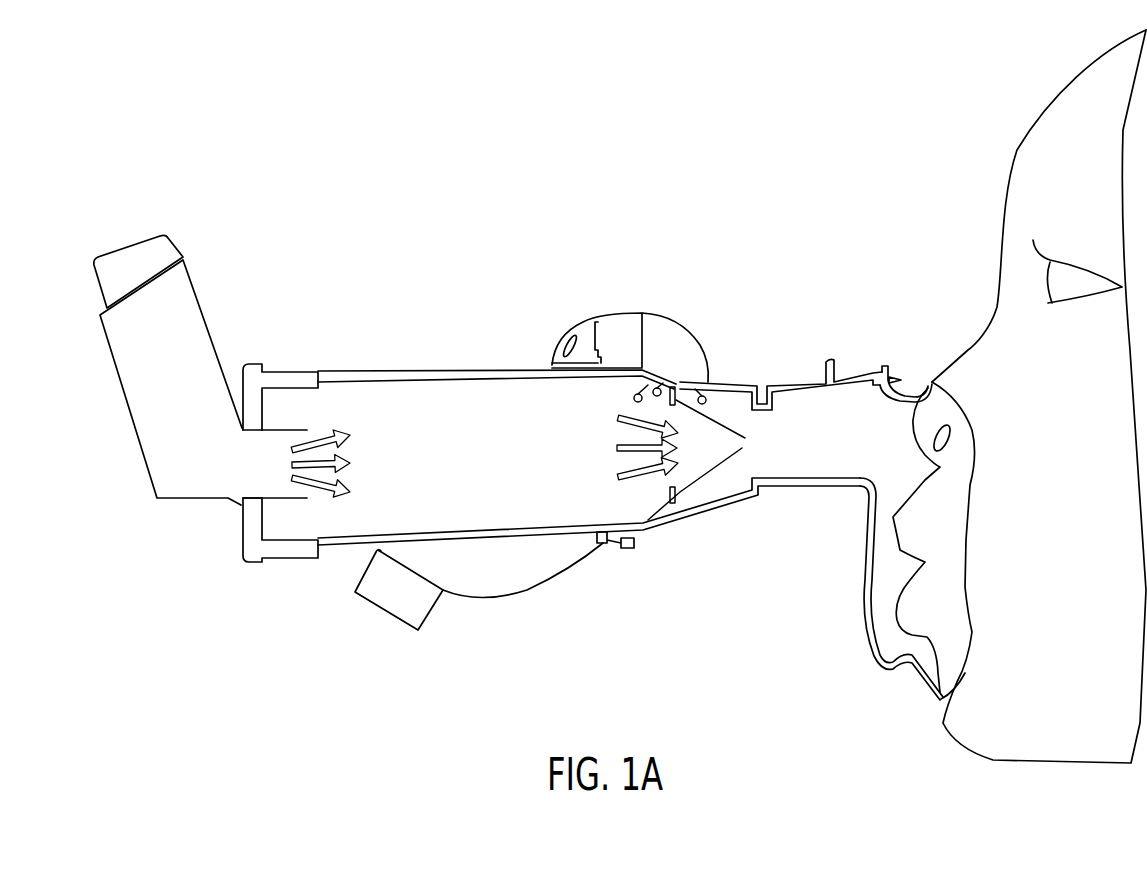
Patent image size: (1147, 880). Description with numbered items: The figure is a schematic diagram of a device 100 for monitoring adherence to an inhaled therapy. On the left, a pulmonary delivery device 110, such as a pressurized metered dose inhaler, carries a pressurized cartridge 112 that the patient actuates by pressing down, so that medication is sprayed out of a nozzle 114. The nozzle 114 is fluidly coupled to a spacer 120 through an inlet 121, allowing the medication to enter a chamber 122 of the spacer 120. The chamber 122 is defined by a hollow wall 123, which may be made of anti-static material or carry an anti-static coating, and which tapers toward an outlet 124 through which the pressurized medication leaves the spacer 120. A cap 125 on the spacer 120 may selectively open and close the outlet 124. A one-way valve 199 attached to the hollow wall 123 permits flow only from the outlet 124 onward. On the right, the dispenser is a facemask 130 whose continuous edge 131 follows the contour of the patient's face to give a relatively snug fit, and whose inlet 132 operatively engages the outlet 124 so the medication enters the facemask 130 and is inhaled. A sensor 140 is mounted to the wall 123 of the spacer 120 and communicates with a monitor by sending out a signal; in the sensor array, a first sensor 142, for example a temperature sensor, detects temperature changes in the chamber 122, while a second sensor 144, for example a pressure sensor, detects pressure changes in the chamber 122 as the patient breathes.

The device 100 is at (186, 630).
The pulmonary delivery device 110 is at (222, 347).
The pressurized cartridge 112 is at (143, 253).
The nozzle 114 is at (300, 429).
The spacer 120 is at (573, 526).
The inlet 121 is at (244, 530).
The chamber 122 is at (484, 456).
The hollow wall 123 is at (510, 533).
The outlet 124 is at (763, 490).
The cap 125 is at (398, 615).
The facemask 130 is at (893, 629).
The continuous edge 131 is at (945, 711).
The inlet 132 is at (812, 490).
The sensor 140 is at (673, 318).
The first sensor 142 is at (706, 397).
The second sensor 144 is at (634, 400).
The one-way valve 199 is at (718, 463).